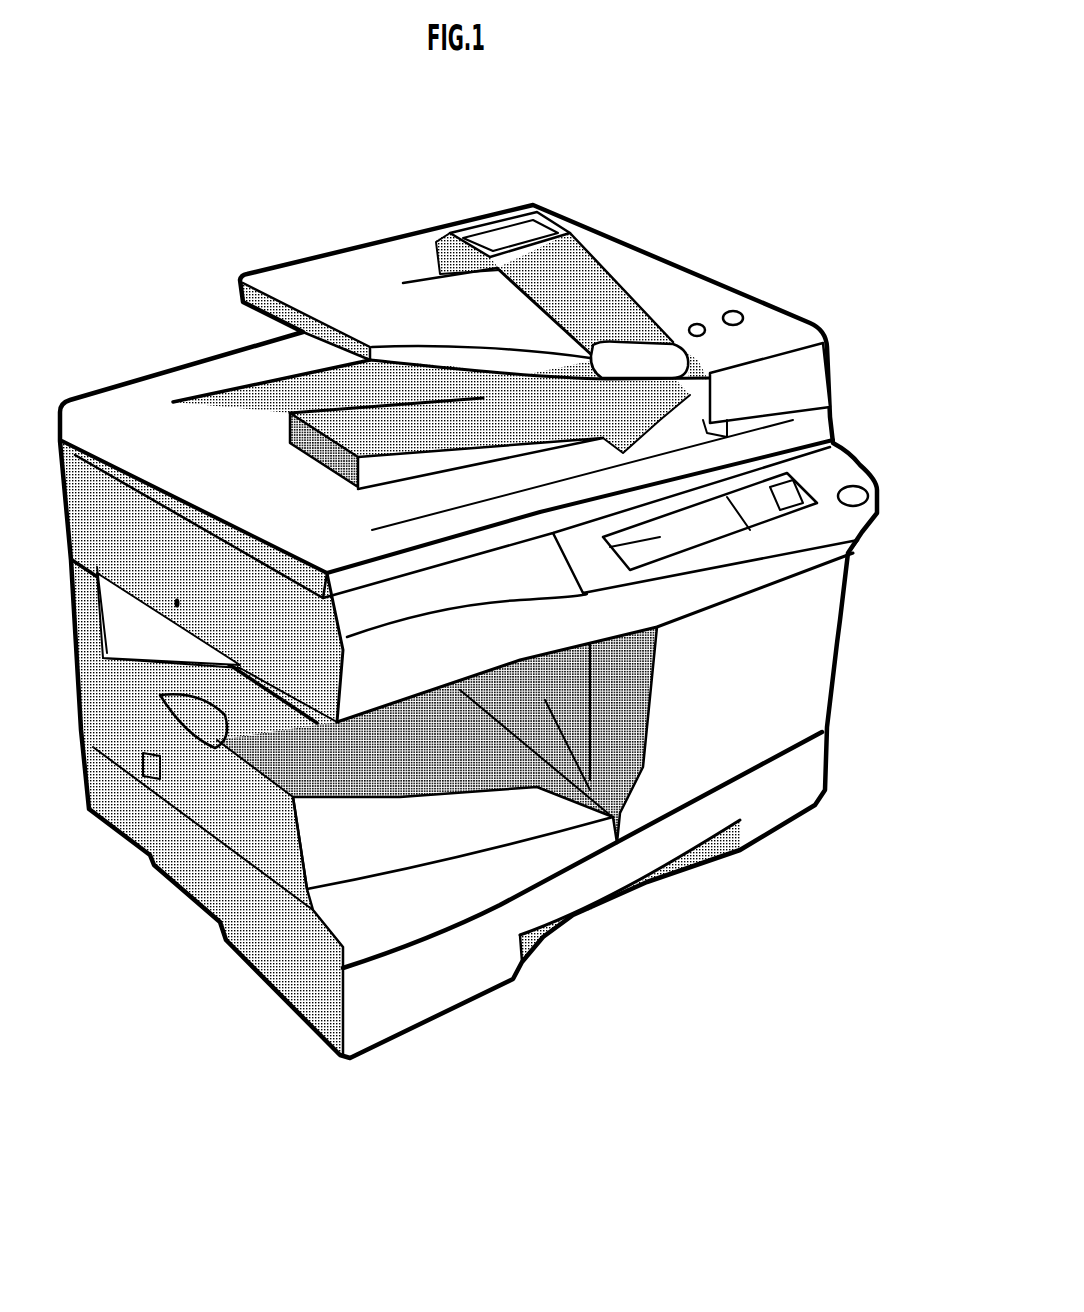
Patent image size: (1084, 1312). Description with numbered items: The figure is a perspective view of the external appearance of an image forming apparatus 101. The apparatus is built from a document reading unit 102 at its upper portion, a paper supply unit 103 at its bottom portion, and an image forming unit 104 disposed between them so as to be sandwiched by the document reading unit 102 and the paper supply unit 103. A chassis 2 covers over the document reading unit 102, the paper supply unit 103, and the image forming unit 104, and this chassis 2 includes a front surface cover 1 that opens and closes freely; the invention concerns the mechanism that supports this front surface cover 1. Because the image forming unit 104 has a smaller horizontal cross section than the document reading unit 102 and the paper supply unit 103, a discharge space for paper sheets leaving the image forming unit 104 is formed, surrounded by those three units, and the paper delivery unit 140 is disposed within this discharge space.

The image forming apparatus 101 is at (714, 247).
The document reading unit 102 is at (850, 348).
The image forming unit 104 is at (877, 573).
The front surface cover 1 is at (793, 660).
The chassis 2 is at (855, 692).
The paper supply unit 103 is at (210, 975).
The paper delivery unit 140 is at (441, 870).